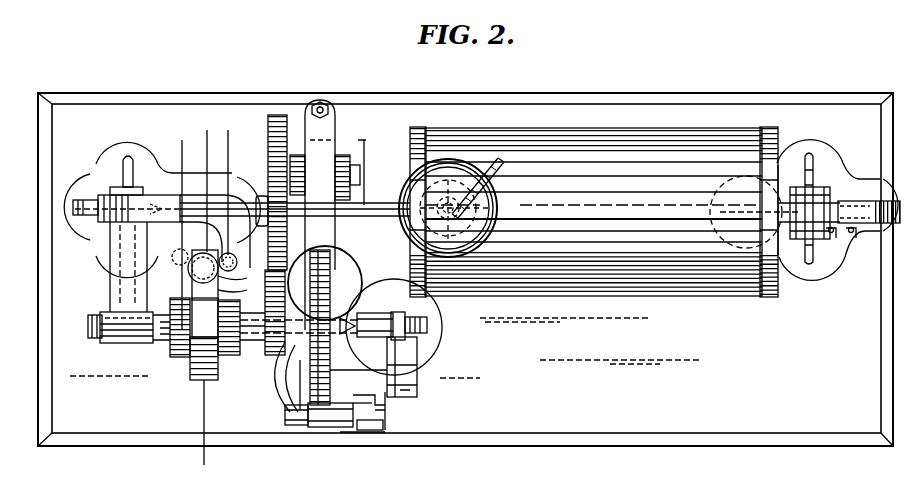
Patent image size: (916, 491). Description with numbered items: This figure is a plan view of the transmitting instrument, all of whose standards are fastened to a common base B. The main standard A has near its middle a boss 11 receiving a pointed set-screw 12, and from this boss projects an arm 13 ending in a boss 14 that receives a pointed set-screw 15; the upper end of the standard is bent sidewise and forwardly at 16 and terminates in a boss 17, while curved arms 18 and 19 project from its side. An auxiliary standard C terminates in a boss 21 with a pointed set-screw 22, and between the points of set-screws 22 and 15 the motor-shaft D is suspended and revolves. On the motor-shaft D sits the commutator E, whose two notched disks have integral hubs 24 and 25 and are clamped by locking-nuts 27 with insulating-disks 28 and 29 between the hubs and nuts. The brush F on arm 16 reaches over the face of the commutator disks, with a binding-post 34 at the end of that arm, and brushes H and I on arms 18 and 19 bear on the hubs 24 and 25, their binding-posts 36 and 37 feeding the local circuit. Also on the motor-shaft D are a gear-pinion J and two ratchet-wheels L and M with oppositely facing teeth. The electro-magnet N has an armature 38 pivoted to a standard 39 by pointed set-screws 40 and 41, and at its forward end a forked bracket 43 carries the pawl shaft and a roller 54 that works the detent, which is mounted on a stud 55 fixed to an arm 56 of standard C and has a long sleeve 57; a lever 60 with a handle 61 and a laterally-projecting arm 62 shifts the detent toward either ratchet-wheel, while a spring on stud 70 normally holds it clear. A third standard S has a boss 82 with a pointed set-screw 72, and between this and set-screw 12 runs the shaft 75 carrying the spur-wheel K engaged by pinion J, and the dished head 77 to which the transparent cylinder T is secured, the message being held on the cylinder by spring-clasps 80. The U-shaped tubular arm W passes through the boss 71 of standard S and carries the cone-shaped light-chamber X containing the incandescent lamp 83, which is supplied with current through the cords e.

The boss 11 is at (118, 188).
The pointed set-screw 12 is at (98, 198).
The arm 13 is at (112, 288).
The boss 14 is at (126, 327).
The pointed set-screw 15 is at (88, 322).
The bent upper end of standard 16 is at (215, 230).
The boss 17 is at (240, 277).
The curved arm 18 is at (180, 236).
The curved arm 19 is at (236, 250).
The boss 21 is at (372, 304).
The pointed set-screw 22 is at (408, 306).
The boss 24 is at (168, 342).
The boss 25 is at (230, 355).
The locking-nuts 27 is at (170, 306).
The insulating-disk 28 is at (170, 360).
The insulating-disk 29 is at (270, 358).
The binding-post 34 is at (241, 291).
The binding-post 36 is at (236, 262).
The binding-post 37 is at (190, 270).
The armature 38 is at (330, 128).
The standard 39 is at (372, 134).
The pointed set-screw 40 is at (312, 185).
The pointed set-screw 41 is at (360, 175).
The forked bracket 43 is at (290, 425).
The roller 54 is at (330, 436).
The stud 55 is at (385, 400).
The arm 56 is at (417, 372).
The sleeve 57 is at (365, 430).
The lever 60 is at (386, 418).
The handle 61 is at (375, 430).
The laterally-projecting arm 62 is at (385, 428).
The stud 70 is at (417, 360).
The boss 71 is at (805, 238).
The pointed set-screw 72 is at (834, 198).
The shaft 75 is at (378, 209).
The dished head 77 is at (418, 128).
The spring-clasps 80 is at (766, 297).
The boss 82 is at (795, 188).
The incandescent lamp 83 is at (445, 218).
The main standard A is at (108, 250).
The base B is at (465, 269).
The auxiliary standard C is at (438, 322).
The motor-shaft D is at (350, 320).
The commutator E is at (190, 375).
The brush F is at (205, 317).
The brush H is at (229, 327).
The brush I is at (197, 277).
The gear-pinion J is at (267, 377).
The spur-wheel K is at (268, 140).
The ratchet-wheel L is at (312, 252).
The ratchet-wheel M is at (330, 254).
The electric motor N is at (282, 390).
The third standard S is at (840, 170).
The transparent cylinder T is at (593, 212).
The tubular arm W is at (593, 208).
The light-chamber X is at (448, 208).
The cords e is at (496, 187).